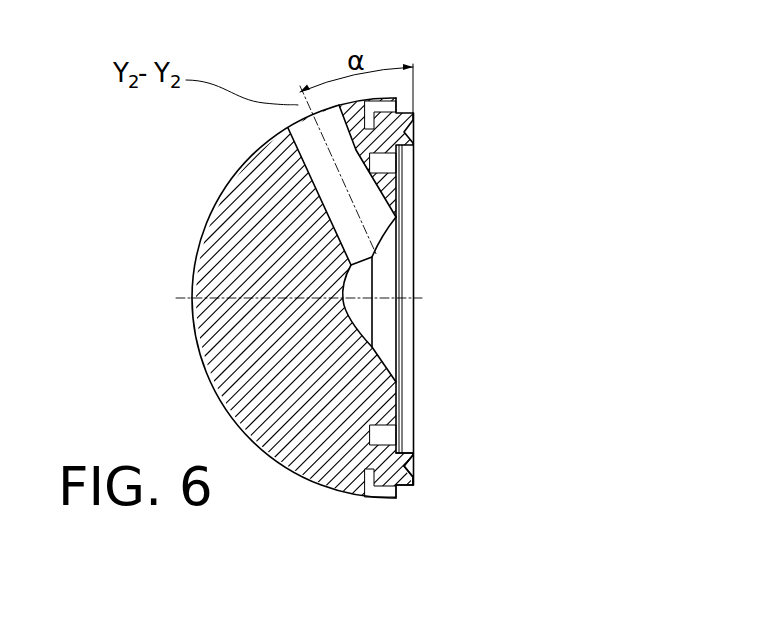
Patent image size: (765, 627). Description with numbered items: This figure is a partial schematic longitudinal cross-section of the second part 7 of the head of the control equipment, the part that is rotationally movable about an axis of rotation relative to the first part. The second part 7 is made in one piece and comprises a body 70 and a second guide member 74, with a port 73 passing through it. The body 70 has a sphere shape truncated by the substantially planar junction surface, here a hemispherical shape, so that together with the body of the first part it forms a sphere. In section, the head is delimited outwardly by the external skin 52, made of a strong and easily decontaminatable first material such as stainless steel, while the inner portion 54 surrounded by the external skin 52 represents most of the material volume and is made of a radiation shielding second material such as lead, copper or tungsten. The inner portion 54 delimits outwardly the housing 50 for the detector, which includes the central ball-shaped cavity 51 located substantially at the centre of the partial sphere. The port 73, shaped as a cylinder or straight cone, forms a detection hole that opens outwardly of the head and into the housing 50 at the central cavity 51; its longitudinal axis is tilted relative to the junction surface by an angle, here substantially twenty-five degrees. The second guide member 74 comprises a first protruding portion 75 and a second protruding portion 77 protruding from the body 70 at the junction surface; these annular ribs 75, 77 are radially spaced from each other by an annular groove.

The second part 7 is at (190, 272).
The body 70 is at (243, 213).
The port 73 is at (318, 158).
The housing 50 is at (412, 252).
The central cavity 51 is at (374, 316).
The external skin 52 is at (200, 348).
The inner portion 54 is at (246, 403).
The second guide member 74 is at (549, 415).
The first protruding portion 75 is at (413, 478).
The second protruding portion 77 is at (413, 457).